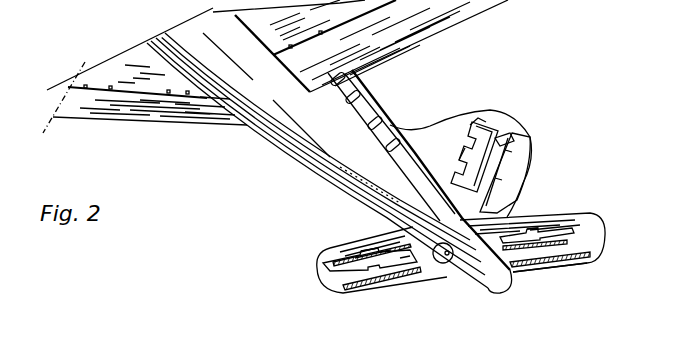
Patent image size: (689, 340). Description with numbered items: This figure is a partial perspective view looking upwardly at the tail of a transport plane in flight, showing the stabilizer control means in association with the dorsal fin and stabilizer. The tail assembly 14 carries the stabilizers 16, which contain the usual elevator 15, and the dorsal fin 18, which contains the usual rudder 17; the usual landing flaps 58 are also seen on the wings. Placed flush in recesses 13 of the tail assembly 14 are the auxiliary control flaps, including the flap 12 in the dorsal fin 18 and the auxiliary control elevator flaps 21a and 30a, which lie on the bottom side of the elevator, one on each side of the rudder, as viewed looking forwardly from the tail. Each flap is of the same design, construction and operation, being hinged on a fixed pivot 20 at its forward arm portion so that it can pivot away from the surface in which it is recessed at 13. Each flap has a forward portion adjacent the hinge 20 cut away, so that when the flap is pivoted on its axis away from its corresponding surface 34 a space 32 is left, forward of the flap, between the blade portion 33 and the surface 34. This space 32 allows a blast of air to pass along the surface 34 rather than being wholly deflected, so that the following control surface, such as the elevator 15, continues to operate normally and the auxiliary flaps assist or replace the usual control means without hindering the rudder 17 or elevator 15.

The auxiliary control flap 12 is at (483, 133).
The recess 13 is at (497, 142).
The tail assembly 14 is at (437, 168).
The elevator 15 is at (587, 250).
The stabilizer 16 is at (537, 219).
The rudder 17 is at (525, 168).
The dorsal fin 18 is at (480, 116).
The fixed pivot 20 is at (478, 127).
The auxiliary control flap 21a is at (578, 237).
The auxiliary control elevator flap 30a is at (335, 273).
The cut-away space 32 is at (465, 147).
The blade portion 33 is at (403, 263).
The corresponding surface 34 is at (428, 264).
The landing flap 58 is at (157, 118).